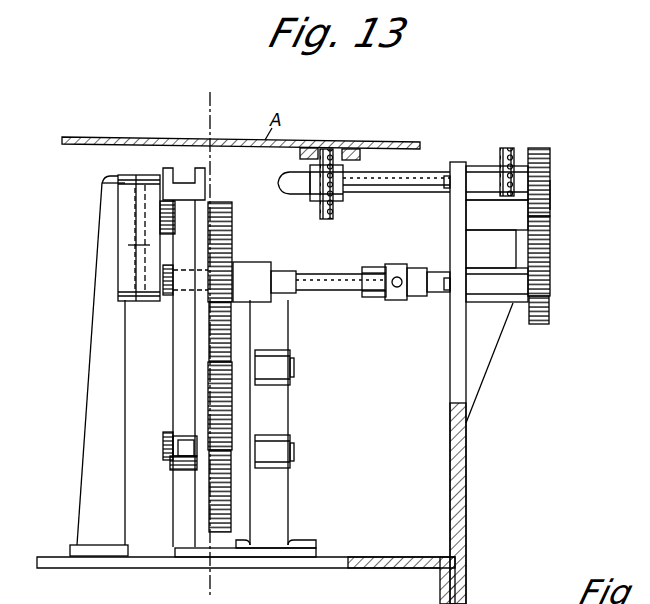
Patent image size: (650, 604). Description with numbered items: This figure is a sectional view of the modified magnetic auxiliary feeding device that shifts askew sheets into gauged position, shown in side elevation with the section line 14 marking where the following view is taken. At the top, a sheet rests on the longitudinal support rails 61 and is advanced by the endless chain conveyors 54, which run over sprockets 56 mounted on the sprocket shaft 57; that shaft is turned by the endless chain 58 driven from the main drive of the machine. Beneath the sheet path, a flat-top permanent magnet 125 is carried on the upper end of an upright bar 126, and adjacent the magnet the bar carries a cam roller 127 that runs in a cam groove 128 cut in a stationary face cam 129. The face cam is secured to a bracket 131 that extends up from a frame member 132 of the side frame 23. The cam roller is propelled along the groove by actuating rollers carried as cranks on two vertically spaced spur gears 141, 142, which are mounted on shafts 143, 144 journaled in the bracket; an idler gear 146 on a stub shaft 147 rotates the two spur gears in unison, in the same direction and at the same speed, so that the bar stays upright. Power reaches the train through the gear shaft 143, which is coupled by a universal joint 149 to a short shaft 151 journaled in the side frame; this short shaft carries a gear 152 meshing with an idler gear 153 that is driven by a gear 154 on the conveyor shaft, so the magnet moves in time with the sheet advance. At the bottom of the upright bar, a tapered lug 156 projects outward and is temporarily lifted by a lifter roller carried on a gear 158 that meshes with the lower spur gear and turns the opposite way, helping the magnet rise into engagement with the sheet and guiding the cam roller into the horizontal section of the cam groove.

The section line 14- 14 is at (182, 103).
The side frame 23 is at (465, 460).
The endless chain conveyor 54 is at (322, 220).
The sprocket 56 is at (342, 198).
The sprocket shaft 57 is at (412, 183).
The endless chain 58 is at (502, 150).
The support rail 61 is at (300, 153).
The permanent magnet 125 is at (168, 176).
The upright bar 126 is at (178, 380).
The cam roller 127 is at (165, 210).
The cam groove 128 is at (140, 246).
The stationary face cam 129 is at (118, 180).
The bracket 131 is at (88, 496).
The frame member 132 is at (402, 563).
The spur gear 141 is at (228, 238).
The spur gear 142 is at (232, 420).
The gear shaft 143 is at (330, 276).
The shaft 144 is at (295, 456).
The idler gear 146 is at (226, 338).
The stub shaft 147 is at (295, 368).
The universal joint 149 is at (392, 302).
The short shaft 151 is at (432, 300).
The gear 152 is at (540, 320).
The idler gear 153 is at (550, 240).
The gear 154 is at (550, 158).
The tapered lug 156 is at (183, 446).
The gear 158 is at (218, 509).